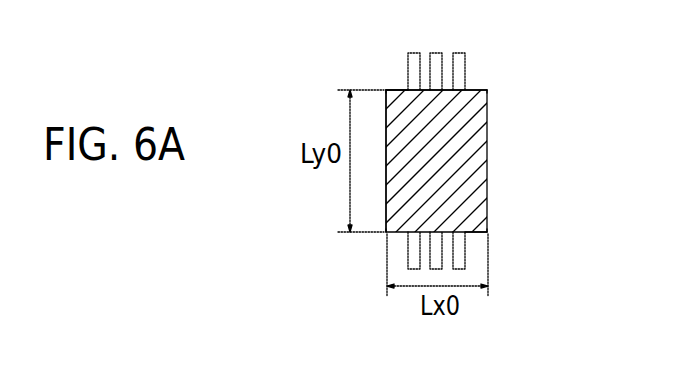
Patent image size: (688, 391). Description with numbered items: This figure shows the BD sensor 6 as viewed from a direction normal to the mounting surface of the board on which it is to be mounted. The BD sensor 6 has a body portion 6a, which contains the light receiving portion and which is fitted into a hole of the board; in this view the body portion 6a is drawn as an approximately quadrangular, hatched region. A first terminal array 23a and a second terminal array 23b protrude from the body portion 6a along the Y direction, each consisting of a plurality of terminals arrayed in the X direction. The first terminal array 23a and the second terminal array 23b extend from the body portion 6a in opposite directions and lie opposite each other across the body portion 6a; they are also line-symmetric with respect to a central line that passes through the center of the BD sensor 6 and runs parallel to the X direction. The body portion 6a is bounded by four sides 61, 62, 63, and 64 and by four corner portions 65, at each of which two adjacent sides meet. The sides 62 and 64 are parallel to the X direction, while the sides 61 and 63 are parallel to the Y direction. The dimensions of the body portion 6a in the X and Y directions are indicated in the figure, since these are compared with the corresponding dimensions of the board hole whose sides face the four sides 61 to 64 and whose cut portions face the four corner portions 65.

The BD sensor 6 is at (517, 63).
The body portion 6a is at (471, 88).
The first terminal array 23a is at (410, 62).
The second terminal array 23b is at (460, 262).
The side 61 is at (487, 148).
The side 62 is at (472, 235).
The side 63 is at (374, 232).
The side 64 is at (397, 88).
The corner portion 65 is at (386, 90).